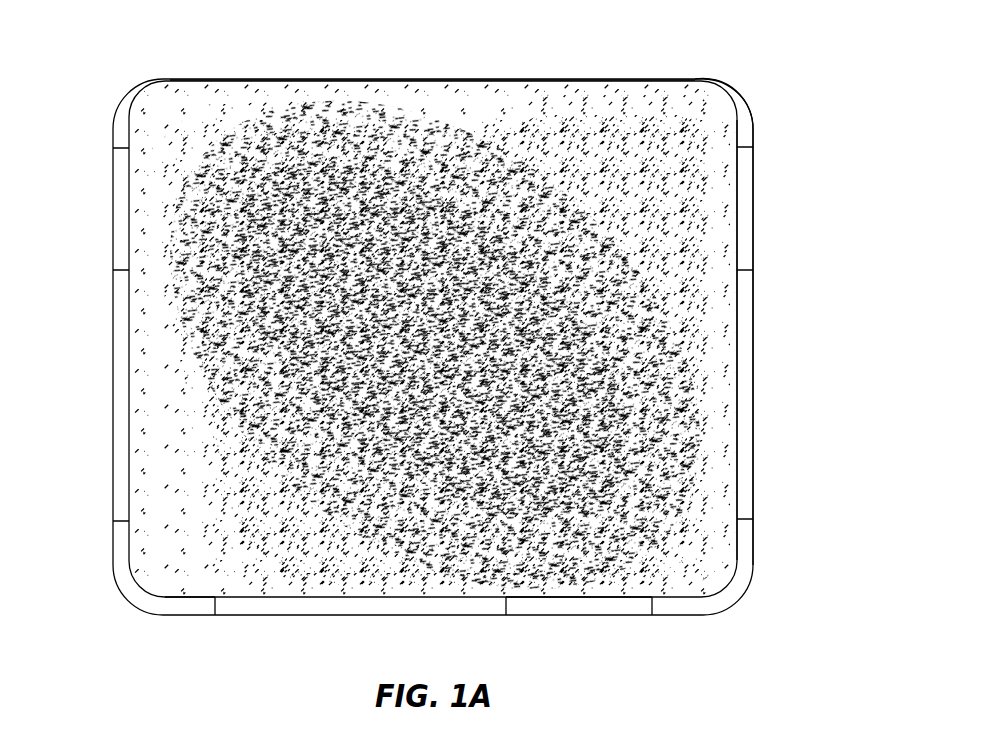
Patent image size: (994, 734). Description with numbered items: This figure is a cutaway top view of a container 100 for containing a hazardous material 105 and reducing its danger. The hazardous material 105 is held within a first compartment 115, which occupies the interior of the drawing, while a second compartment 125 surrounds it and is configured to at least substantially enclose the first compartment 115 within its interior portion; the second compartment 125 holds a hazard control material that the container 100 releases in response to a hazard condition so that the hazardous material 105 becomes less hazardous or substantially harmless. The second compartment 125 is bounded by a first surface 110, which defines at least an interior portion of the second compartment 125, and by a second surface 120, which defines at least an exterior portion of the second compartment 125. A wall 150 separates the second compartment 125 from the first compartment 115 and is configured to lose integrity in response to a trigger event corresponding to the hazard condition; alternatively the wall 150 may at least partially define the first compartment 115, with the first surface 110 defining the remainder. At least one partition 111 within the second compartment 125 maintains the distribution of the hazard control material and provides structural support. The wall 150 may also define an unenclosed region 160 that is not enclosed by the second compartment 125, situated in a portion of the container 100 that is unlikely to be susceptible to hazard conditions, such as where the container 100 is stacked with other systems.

The container 100 is at (765, 49).
The hazardous material 105 is at (388, 105).
The first surface 110 is at (270, 78).
The partition 111 is at (215, 600).
The first compartment 115 is at (167, 334).
The second surface 120 is at (755, 210).
The second compartment 125 is at (742, 336).
The wall 150 is at (542, 597).
The unenclosed region 160 is at (680, 79).